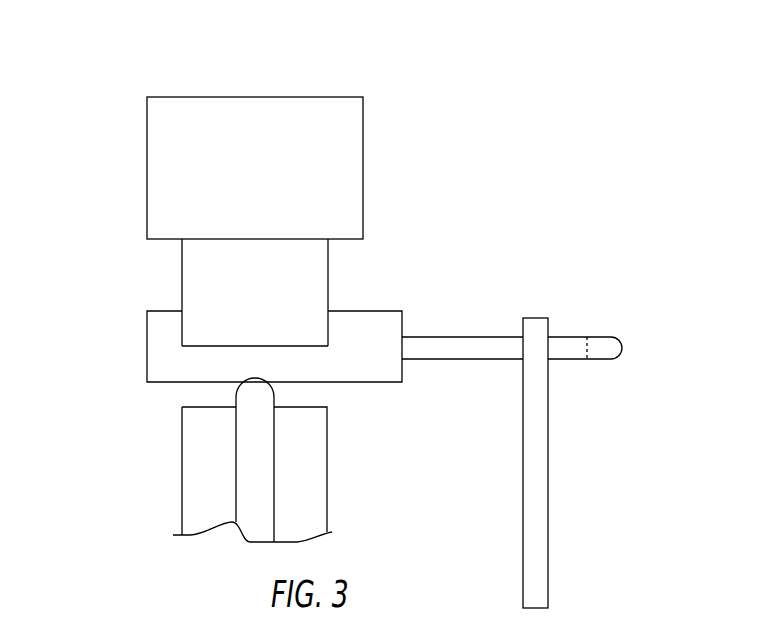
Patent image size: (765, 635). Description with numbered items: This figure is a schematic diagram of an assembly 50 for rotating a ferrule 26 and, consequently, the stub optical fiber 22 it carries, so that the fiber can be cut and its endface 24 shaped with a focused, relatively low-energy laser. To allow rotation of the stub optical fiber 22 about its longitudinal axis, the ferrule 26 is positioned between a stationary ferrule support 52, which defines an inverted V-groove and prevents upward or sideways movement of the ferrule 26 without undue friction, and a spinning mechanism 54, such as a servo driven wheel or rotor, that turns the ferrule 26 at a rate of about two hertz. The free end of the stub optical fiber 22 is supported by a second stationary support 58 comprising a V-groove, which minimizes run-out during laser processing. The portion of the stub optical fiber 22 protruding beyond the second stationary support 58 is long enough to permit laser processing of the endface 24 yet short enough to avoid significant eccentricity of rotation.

The assembly 50 is at (80, 100).
The stationary ferrule support 52 is at (266, 115).
The ferrule 26 is at (155, 337).
The stub optical fiber 22 is at (443, 335).
The endface 24 is at (594, 338).
The second stationary support 58 is at (535, 433).
The spinning mechanism 54 is at (190, 487).